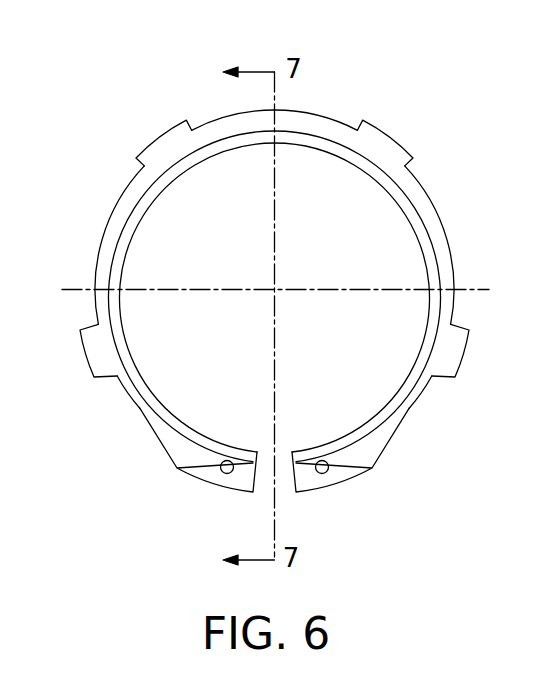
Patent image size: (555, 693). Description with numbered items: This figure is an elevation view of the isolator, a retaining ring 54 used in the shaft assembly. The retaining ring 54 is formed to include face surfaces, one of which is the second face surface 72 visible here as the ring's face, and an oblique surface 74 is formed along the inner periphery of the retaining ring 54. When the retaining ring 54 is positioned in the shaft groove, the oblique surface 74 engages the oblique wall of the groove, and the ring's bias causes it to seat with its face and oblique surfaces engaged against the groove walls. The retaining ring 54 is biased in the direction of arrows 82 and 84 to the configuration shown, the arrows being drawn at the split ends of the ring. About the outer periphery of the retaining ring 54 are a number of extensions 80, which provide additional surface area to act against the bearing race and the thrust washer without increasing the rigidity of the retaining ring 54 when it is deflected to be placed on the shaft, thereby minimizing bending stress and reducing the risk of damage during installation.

The retaining ring 54 is at (467, 128).
The second face surface 72 is at (427, 205).
The oblique surface 74 is at (433, 262).
The extensions 80 is at (158, 135).
The arrow 82 is at (313, 515).
The arrow 84 is at (238, 515).